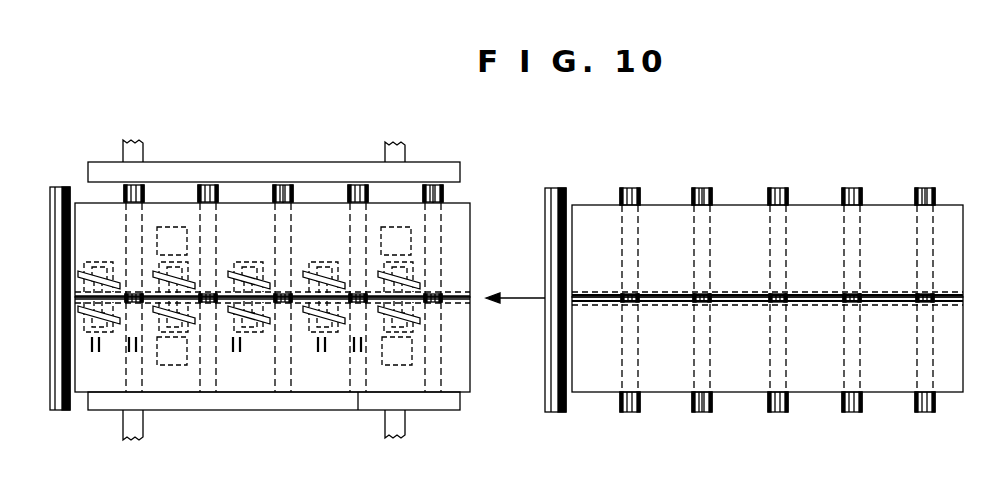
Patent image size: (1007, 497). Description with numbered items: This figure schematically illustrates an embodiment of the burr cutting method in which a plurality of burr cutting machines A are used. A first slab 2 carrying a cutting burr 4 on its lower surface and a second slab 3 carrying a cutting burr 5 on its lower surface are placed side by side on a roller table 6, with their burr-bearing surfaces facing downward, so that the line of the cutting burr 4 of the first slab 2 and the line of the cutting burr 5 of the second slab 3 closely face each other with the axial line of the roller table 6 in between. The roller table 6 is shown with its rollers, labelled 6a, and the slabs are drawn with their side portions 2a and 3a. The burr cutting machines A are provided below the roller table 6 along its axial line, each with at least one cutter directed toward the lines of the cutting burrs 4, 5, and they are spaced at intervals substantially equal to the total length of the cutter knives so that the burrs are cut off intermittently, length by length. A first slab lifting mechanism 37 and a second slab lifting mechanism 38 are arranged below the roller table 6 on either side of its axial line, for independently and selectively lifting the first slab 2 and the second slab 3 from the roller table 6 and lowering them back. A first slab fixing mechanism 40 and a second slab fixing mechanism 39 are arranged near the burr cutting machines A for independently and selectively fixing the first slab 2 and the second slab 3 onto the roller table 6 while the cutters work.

The first slab 2 is at (232, 196).
The side wall of upper half 2a is at (322, 202).
The second slab 3 is at (246, 378).
The side wall of lower half 3a is at (328, 398).
The cutting burr 4 is at (455, 292).
The cutting burr 5 is at (462, 306).
The roller table 6 is at (462, 188).
The guide pins 6a is at (60, 412).
The first slab lifting mechanism 37 is at (170, 227).
The second slab lifting mechanism 38 is at (178, 365).
The second slab fixing mechanism 39 is at (284, 162).
The first slab fixing mechanism 40 is at (250, 400).
The burr cutting machine A is at (100, 258).